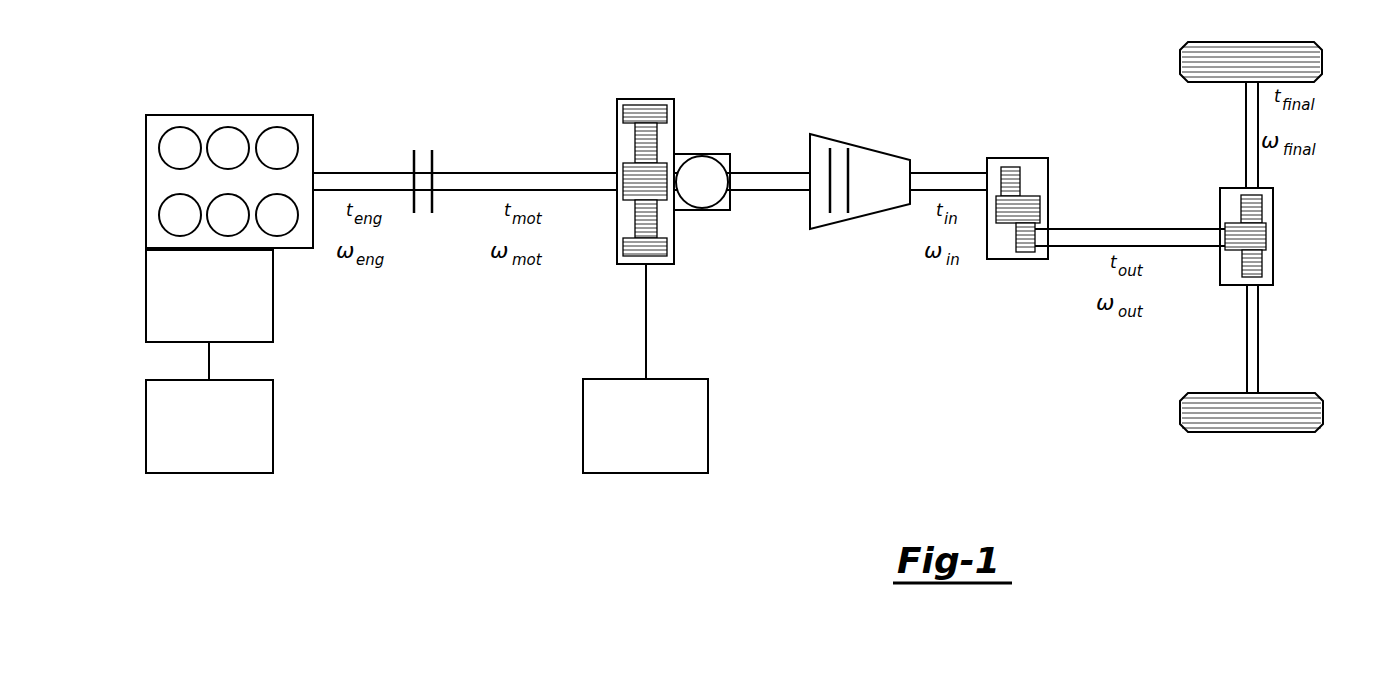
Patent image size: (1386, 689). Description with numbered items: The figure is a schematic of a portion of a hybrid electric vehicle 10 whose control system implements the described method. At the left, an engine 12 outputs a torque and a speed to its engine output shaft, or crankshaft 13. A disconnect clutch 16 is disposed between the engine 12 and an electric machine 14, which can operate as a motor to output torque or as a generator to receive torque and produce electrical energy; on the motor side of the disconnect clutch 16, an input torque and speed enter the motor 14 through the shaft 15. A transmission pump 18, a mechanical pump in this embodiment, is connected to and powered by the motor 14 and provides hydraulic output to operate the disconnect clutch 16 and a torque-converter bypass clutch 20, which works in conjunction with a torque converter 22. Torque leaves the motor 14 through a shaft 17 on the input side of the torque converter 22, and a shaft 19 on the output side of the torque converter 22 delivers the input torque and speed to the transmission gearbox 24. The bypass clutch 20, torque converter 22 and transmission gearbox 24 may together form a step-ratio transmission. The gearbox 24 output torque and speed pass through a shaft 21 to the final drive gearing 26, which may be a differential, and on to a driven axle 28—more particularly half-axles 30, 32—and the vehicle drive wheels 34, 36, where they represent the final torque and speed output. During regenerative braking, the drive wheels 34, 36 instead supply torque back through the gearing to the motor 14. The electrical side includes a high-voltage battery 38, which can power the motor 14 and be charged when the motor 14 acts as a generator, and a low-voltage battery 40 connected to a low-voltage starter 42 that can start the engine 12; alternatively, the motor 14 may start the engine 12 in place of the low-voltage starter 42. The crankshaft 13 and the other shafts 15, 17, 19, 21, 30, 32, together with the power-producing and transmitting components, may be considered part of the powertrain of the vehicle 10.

The vehicle 10 is at (975, 48).
The engine 12 is at (230, 115).
The crankshaft 13 is at (358, 172).
The electric machine 14 is at (645, 99).
The shaft 15 is at (539, 172).
The disconnect clutch 16 is at (432, 155).
The shaft 17 is at (767, 172).
The transmission pump 18 is at (703, 154).
The shaft 19 is at (953, 172).
The torque-converter bypass clutch 20 is at (850, 158).
The shaft 21 is at (1100, 228).
The torque converter 22 is at (827, 134).
The transmission gearbox 24 is at (1018, 158).
The final drive gearing 26 is at (1273, 203).
The driven axle 28 is at (1272, 314).
The half-axle 30 is at (1258, 363).
The half-axle 32 is at (1246, 113).
The drive wheel 34 is at (1323, 412).
The drive wheel 36 is at (1322, 62).
The high-voltage battery 38 is at (646, 473).
The low-voltage battery 40 is at (209, 473).
The low-voltage starter 42 is at (273, 296).